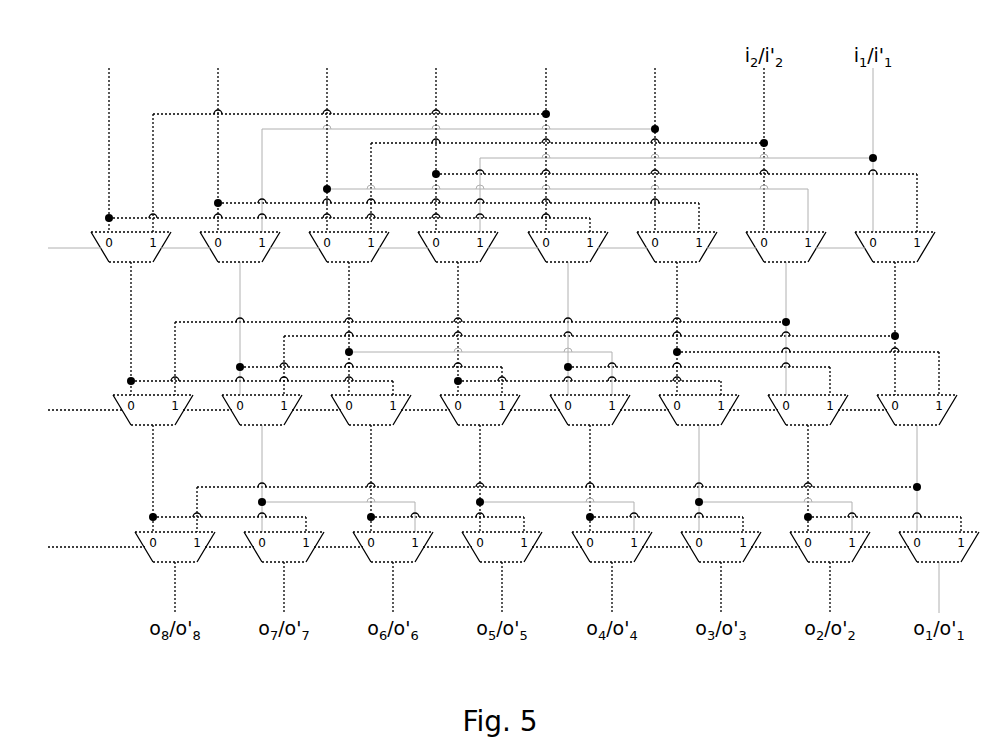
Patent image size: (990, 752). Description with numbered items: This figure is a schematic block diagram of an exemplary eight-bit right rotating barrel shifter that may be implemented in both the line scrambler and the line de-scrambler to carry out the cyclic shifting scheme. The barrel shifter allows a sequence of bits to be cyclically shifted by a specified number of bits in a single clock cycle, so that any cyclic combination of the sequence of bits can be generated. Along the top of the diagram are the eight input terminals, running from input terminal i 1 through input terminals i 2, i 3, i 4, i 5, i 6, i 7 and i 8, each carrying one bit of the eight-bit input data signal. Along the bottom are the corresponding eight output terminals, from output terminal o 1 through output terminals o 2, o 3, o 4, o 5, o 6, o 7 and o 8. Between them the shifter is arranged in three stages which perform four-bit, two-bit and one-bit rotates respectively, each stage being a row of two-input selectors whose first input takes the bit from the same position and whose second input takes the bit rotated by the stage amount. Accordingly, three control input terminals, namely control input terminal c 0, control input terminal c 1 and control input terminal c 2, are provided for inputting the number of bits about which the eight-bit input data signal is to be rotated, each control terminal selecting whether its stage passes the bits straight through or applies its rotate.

The control signal c0 line 0 is at (468, 548).
The control signal c1 line 1 is at (457, 411).
The control signal c2 line 2 is at (446, 249).
The input i3/i' 3 is at (655, 138).
The input i4/i' 4 is at (546, 138).
The input i5/i' 5 is at (436, 138).
The input i6/i' 6 is at (327, 138).
The input i7/i' 7 is at (218, 138).
The input i8/i' 8 is at (109, 138).